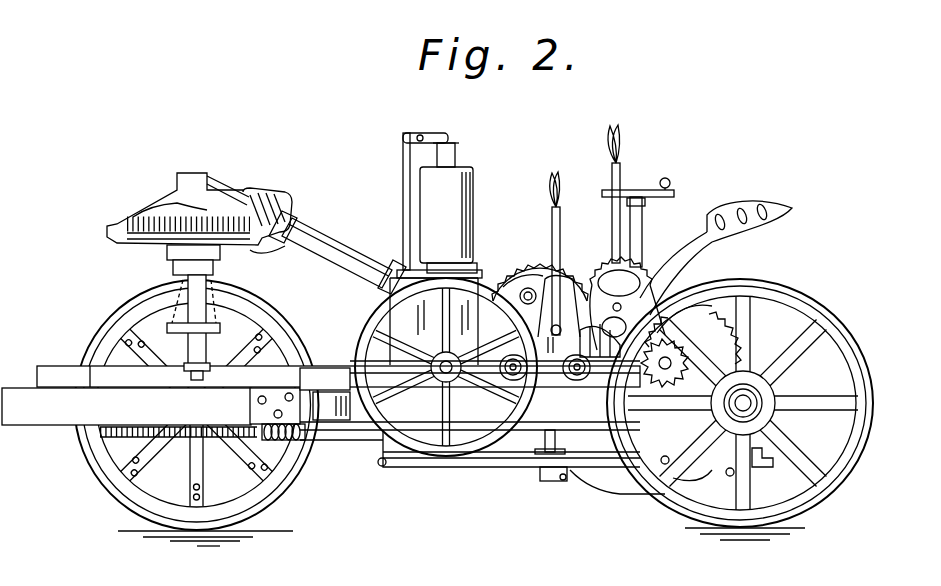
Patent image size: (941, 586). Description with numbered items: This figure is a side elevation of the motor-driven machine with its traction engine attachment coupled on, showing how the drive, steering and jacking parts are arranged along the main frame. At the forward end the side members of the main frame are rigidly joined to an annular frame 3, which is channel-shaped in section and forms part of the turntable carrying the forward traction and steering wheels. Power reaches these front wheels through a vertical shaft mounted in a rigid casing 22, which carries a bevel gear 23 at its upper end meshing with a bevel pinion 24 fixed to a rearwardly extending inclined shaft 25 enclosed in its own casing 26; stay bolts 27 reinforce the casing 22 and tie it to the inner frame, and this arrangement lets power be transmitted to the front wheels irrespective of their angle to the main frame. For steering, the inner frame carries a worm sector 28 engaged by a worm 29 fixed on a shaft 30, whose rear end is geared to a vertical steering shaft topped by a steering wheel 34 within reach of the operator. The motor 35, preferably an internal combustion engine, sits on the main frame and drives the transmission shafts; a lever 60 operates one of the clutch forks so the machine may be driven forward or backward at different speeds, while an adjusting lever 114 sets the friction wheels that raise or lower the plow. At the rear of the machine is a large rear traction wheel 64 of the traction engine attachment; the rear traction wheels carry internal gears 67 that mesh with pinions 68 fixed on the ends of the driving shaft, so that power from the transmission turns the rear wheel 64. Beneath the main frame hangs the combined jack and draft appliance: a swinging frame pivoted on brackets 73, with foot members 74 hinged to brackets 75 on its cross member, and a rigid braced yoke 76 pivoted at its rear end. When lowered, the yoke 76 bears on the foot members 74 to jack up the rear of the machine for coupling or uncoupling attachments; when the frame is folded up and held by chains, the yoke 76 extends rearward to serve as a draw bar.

The annular frame 3 is at (45, 415).
The casing 22 is at (132, 245).
The bevel gear 23 is at (257, 251).
The bevel pinion 24 is at (270, 192).
The inclined shaft 25 is at (292, 223).
The casing 26 is at (342, 250).
The stay bolts 27 is at (175, 285).
The worm sector 28 is at (160, 433).
The worm 29 is at (315, 460).
The shaft 30 is at (345, 440).
The steering wheel 34 is at (675, 192).
The motor 35 is at (460, 210).
The lever 60 is at (620, 170).
The rear drive wheel 64 is at (862, 422).
The internal gears 67 is at (632, 392).
The pinions 68 is at (675, 357).
The brackets 73 is at (384, 467).
The foot members 74 is at (650, 496).
The brackets 75 is at (563, 483).
The yoke 76 is at (762, 468).
The adjusting lever 114 is at (552, 238).